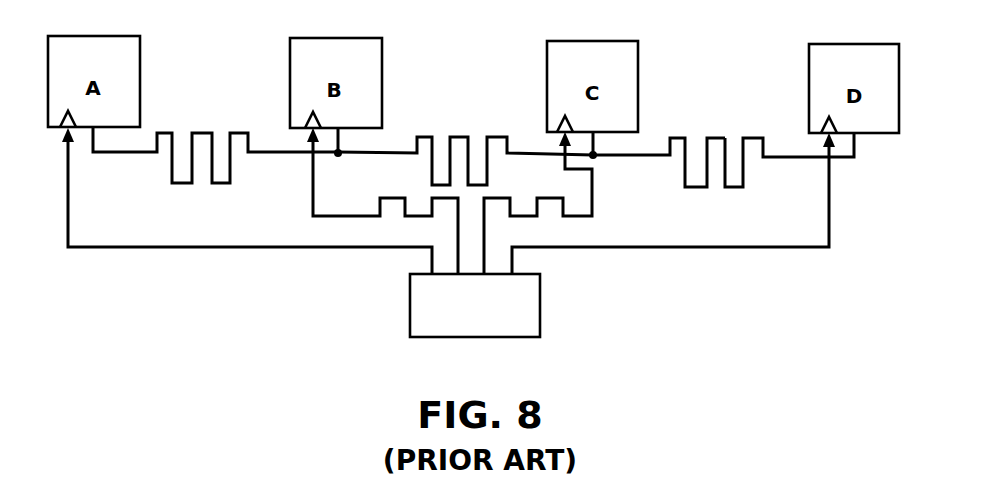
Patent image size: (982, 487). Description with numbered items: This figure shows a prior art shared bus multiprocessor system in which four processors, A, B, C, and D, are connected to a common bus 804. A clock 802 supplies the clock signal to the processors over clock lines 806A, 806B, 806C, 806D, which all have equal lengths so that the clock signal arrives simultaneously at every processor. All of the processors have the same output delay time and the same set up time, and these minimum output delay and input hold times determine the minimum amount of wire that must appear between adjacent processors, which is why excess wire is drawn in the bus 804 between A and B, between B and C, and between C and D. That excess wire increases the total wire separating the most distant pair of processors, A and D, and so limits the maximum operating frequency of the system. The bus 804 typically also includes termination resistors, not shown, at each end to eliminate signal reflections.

The clock 802 is at (410, 308).
The bus 804 is at (718, 138).
The clock line 806A is at (118, 248).
The clock line 806B is at (313, 192).
The clock line 806C is at (592, 196).
The clock line 806D is at (829, 212).